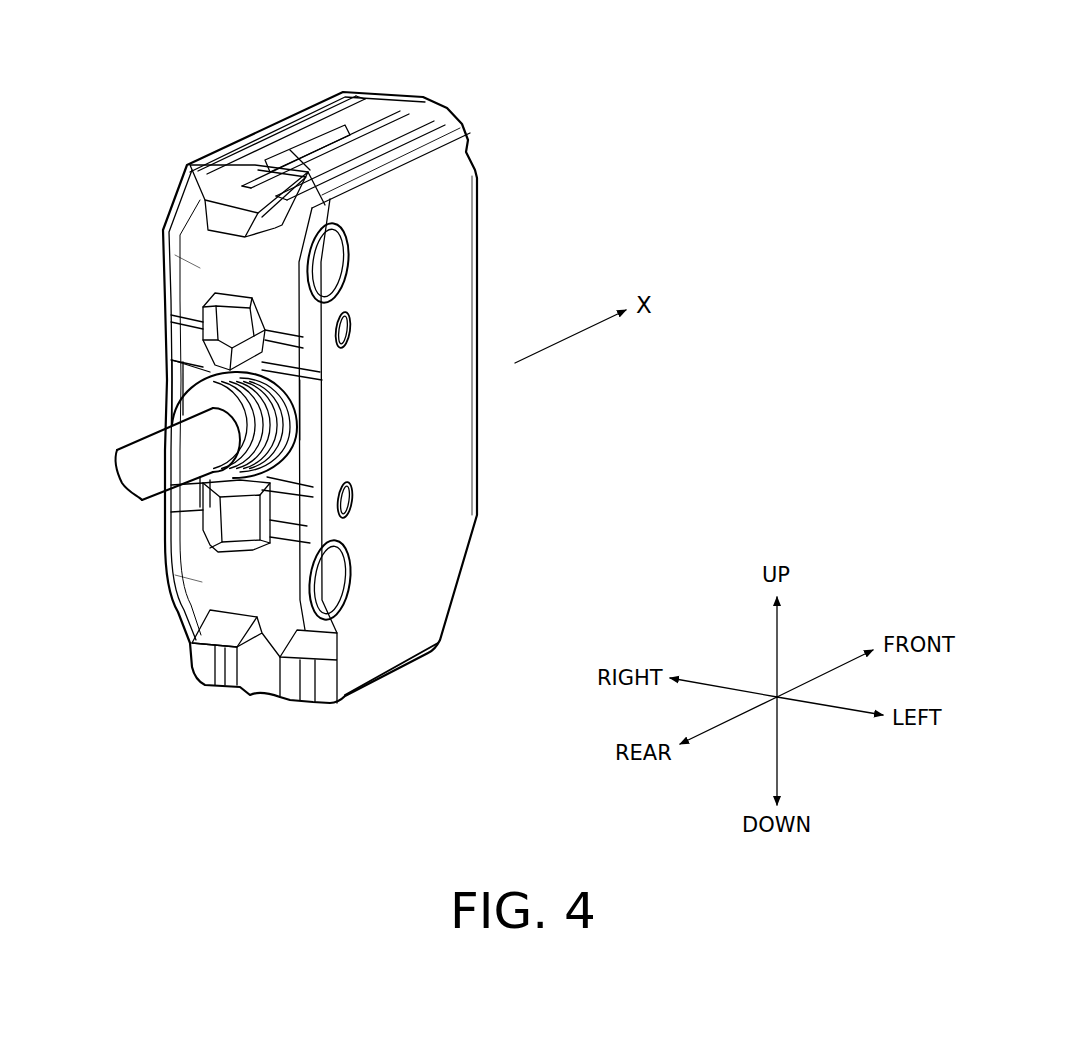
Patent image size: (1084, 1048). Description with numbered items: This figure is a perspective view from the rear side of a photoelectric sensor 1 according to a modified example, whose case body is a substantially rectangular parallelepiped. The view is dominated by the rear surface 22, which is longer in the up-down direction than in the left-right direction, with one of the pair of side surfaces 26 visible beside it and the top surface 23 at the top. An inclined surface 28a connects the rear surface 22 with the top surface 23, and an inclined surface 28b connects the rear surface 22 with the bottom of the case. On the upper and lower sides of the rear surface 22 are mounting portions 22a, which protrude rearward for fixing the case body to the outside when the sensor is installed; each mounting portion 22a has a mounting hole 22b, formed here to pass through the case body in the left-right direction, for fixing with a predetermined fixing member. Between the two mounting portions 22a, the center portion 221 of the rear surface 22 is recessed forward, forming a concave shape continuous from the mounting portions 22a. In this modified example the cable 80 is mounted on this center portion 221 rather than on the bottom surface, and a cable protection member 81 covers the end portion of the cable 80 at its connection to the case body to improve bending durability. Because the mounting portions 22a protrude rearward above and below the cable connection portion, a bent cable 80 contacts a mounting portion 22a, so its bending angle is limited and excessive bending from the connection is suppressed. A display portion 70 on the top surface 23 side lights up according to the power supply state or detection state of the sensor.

The photoelectric sensor 1 is at (61, 20).
The rear surface 22 is at (174, 322).
The mounting portion 22a is at (200, 267).
The mounting hole 22b is at (325, 263).
The top surface 23 is at (270, 150).
The side surface 26 is at (436, 410).
The inclined surface 28a is at (163, 225).
The inclined surface 28b is at (272, 683).
The display portion 70 is at (357, 123).
The cable 80 is at (150, 460).
The cable protection member 81 is at (210, 387).
The center portion 221 is at (302, 410).